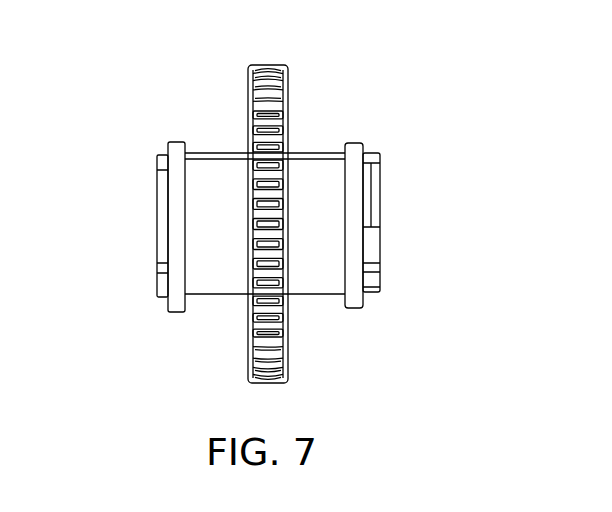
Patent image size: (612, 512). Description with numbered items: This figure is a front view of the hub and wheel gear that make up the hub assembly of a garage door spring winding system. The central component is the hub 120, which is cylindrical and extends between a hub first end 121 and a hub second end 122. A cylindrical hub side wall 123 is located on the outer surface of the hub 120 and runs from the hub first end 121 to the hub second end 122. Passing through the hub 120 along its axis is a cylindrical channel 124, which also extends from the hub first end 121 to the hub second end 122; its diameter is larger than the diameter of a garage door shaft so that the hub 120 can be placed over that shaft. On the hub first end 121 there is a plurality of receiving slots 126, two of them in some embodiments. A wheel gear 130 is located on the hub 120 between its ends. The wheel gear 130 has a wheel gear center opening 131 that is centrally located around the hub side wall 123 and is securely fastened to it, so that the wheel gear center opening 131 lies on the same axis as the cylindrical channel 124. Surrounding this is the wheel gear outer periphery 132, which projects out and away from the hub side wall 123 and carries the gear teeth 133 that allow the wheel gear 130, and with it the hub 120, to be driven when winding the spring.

The hub 120 is at (310, 295).
The hub first end 121 is at (157, 189).
The hub second end 122 is at (375, 192).
The hub side wall 123 is at (312, 192).
The cylindrical channel 124 is at (383, 218).
The receiving slots 126 is at (157, 265).
The wheel gear 130 is at (288, 88).
The wheel gear center opening 131 is at (289, 150).
The wheel gear outer periphery 132 is at (262, 340).
The gear teeth 133 is at (247, 112).